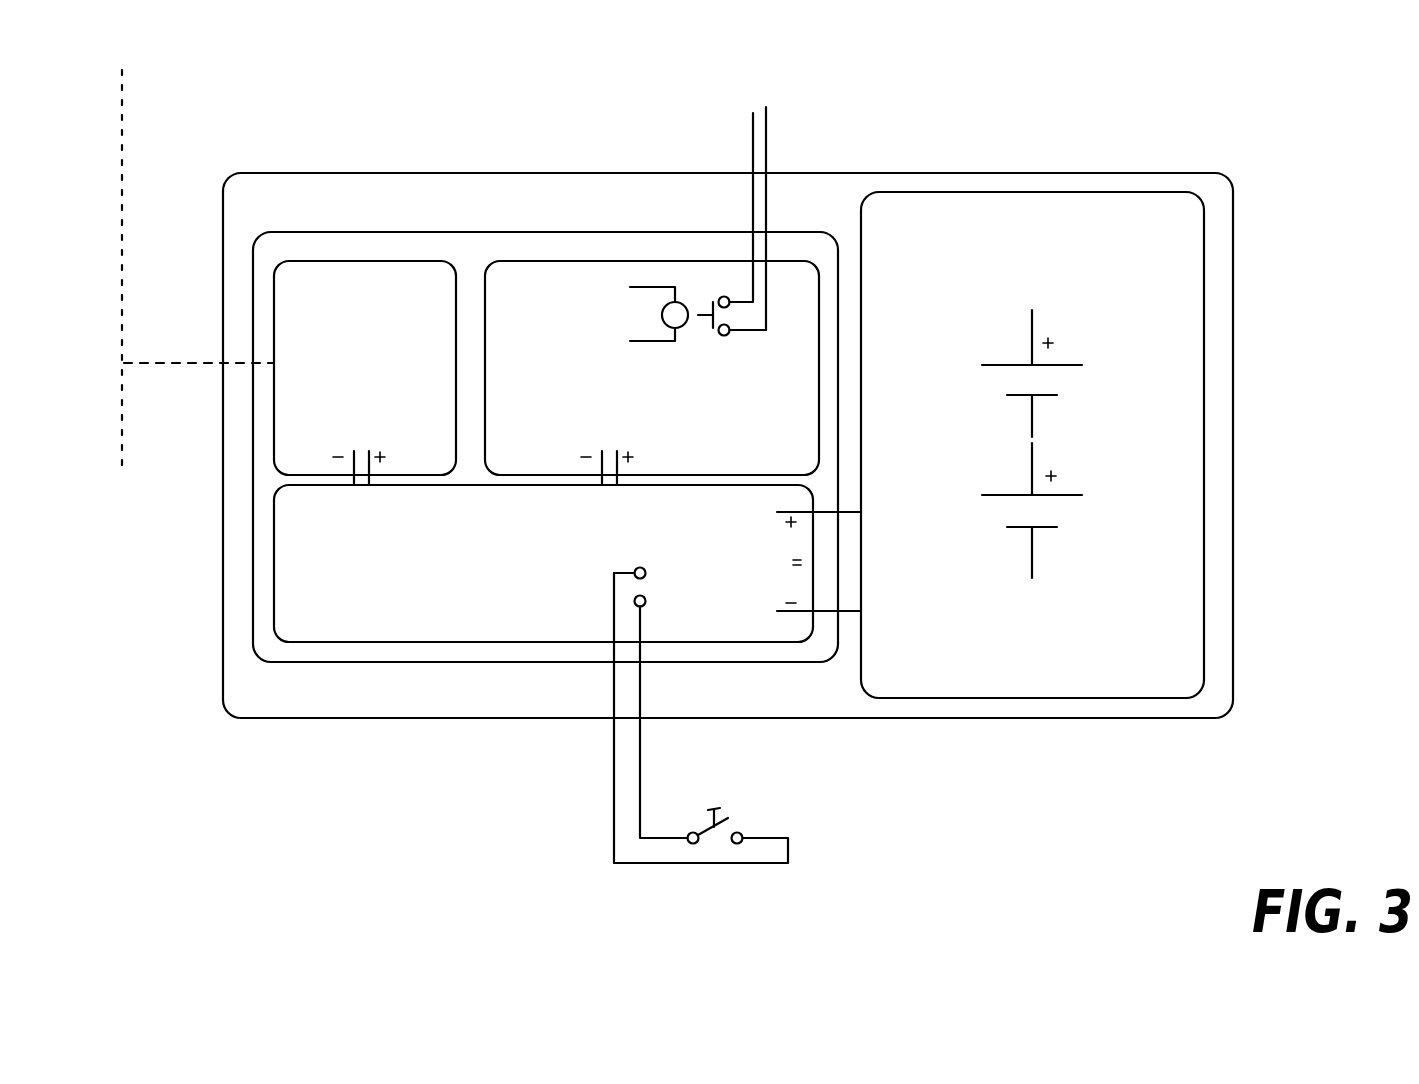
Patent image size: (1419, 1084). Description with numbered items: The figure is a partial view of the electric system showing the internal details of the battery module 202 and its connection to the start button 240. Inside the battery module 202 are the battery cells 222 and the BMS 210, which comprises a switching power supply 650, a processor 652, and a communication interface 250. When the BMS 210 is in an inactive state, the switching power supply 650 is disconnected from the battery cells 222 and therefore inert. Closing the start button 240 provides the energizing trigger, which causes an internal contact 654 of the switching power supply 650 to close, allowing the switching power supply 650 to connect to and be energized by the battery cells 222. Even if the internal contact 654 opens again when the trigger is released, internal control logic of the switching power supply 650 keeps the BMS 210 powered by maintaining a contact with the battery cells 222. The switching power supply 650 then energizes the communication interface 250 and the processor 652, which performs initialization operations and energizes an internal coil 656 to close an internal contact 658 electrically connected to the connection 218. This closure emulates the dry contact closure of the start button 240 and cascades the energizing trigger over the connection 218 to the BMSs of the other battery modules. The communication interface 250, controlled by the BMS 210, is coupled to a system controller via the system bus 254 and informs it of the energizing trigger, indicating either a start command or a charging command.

The battery module 202 is at (1135, 173).
The BMS 210 is at (492, 232).
The connection 218 is at (767, 148).
The battery cells 222 is at (947, 192).
The start button 240 is at (730, 812).
The communication interface 250 is at (362, 261).
The system bus 254 is at (122, 118).
The switching power supply 650 is at (413, 643).
The processor 652 is at (600, 261).
The internal contact 654 is at (646, 570).
The internal coil 656 is at (679, 330).
The internal contact 658 is at (727, 336).